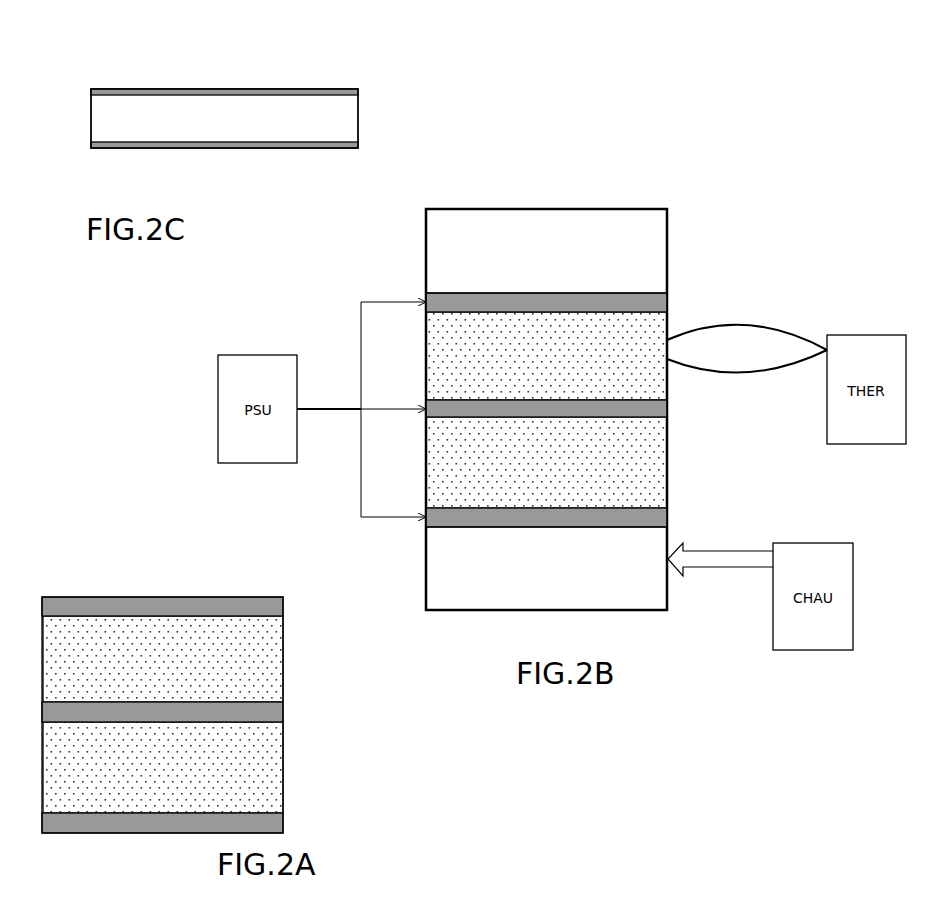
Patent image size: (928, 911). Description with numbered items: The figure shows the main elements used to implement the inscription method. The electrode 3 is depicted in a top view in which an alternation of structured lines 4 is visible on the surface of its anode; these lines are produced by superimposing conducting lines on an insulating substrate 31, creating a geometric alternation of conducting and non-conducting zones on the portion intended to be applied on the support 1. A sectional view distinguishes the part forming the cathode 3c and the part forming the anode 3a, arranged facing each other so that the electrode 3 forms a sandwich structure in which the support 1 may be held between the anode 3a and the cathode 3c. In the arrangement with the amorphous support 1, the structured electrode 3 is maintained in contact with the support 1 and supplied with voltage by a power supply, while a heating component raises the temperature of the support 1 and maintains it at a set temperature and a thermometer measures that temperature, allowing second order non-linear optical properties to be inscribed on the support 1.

In FIG. 2C, the support 1 is at (364, 116).
In FIG. 2B, the support 1 is at (579, 196).
In FIG. 2C, the electrode 3 is at (310, 67).
In FIG. 2B, the electrode 3 is at (386, 254).
In FIG. 2A, the electrode 3 is at (132, 564).
In FIG. 2C, the anode 3a is at (256, 149).
In FIG. 2C, the cathode 3c is at (238, 89).
In FIG. 2B, the structured lines 4 is at (482, 293).
In FIG. 2A, the structured lines 4 is at (95, 597).
In FIG. 2B, the insulating substrate 31 is at (655, 461).
In FIG. 2A, the insulating substrate 31 is at (263, 664).